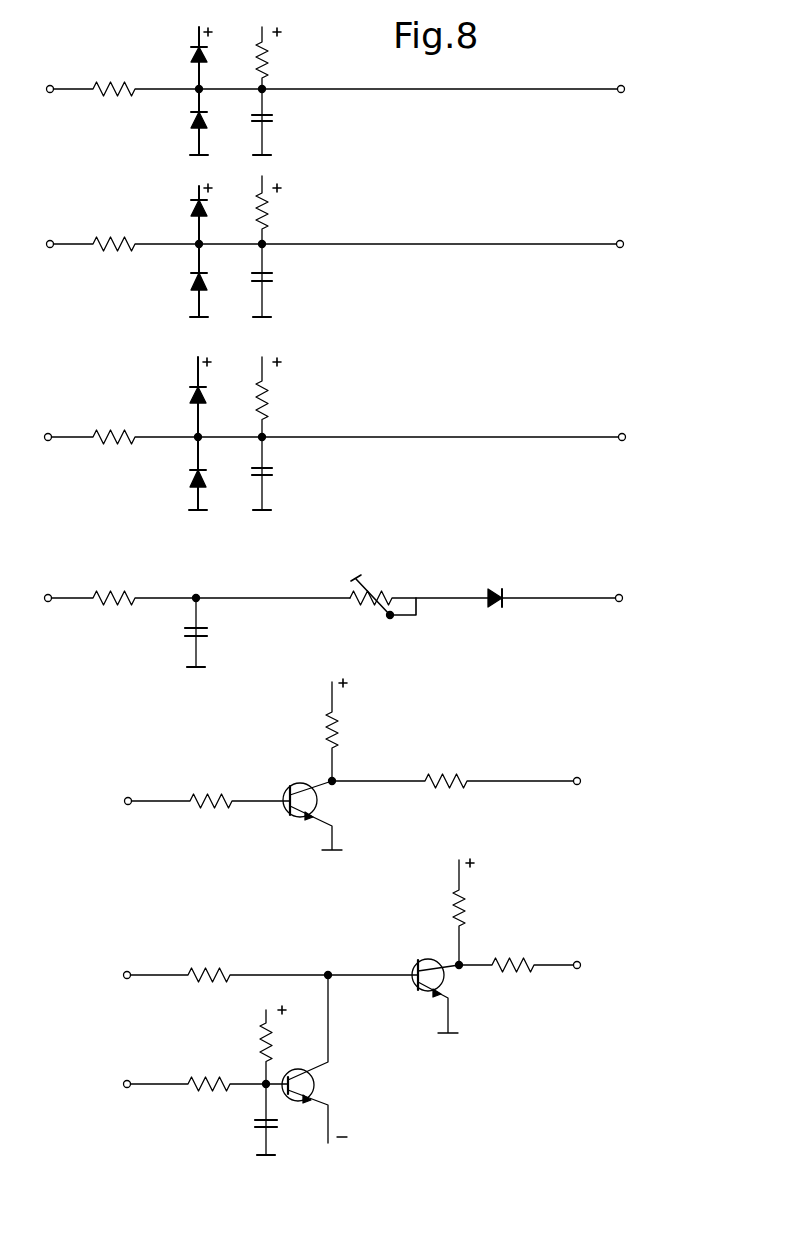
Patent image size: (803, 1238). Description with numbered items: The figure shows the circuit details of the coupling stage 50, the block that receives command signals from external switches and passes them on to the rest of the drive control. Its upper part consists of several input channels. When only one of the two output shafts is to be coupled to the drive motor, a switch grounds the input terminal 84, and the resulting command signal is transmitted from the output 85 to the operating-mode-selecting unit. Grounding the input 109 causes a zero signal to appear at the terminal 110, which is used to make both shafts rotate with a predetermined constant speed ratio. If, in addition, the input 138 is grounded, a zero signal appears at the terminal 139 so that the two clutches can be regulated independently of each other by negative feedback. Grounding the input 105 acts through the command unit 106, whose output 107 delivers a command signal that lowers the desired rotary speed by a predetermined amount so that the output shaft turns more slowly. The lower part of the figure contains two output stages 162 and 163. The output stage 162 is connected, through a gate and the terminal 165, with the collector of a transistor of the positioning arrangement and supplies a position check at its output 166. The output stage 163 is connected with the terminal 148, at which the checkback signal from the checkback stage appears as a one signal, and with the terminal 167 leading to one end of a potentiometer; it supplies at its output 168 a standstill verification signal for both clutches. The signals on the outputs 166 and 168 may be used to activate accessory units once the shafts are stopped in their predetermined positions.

The coupling stage 50 is at (658, 83).
The input terminal 84 is at (50, 85).
The output 85 is at (617, 86).
The input 138 is at (49, 231).
The terminal 139 is at (615, 232).
The input 109 is at (48, 420).
The terminal 110 is at (616, 422).
The input 105 is at (48, 584).
The command unit 106 is at (406, 632).
The output 107 is at (615, 587).
The output stage 162 is at (381, 801).
The terminal 165 is at (128, 805).
The output 166 is at (577, 774).
The output stage 163 is at (382, 1063).
The terminal 148 is at (127, 979).
The terminal 167 is at (127, 1088).
The output 168 is at (577, 969).